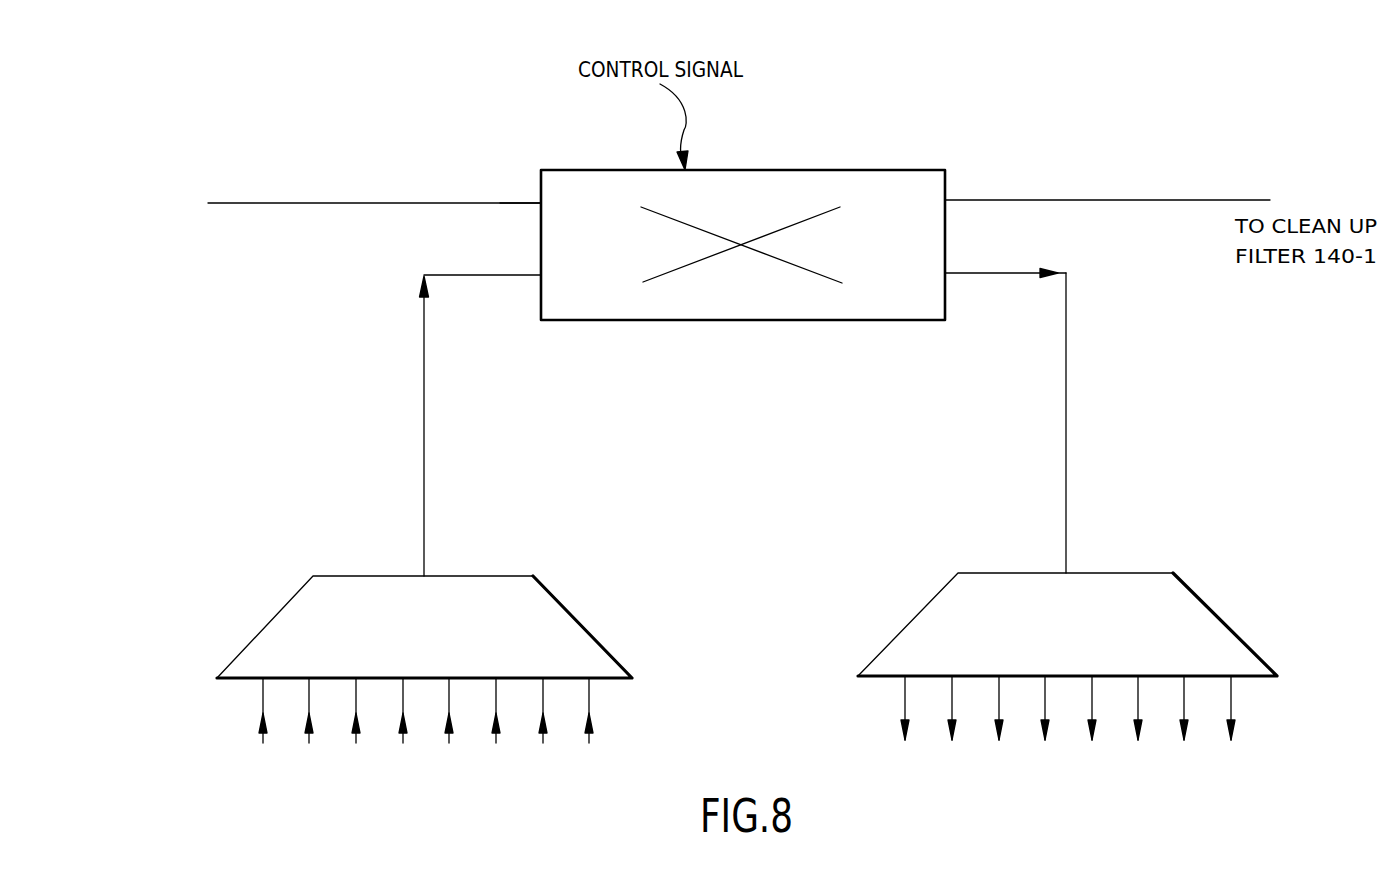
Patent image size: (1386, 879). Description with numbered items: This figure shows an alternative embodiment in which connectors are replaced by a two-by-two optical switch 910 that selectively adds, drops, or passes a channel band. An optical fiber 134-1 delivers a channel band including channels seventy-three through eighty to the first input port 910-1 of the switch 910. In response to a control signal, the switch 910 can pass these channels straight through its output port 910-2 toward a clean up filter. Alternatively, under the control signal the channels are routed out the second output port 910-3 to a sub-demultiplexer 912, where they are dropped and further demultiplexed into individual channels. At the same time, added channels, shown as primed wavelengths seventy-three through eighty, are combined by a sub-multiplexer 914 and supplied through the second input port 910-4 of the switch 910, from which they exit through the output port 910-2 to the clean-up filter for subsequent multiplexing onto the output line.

The 2×2 optical switch 910 is at (872, 170).
The first input port 910-1 is at (540, 200).
The output port 910-2 is at (946, 199).
The second output port 910-3 is at (946, 272).
The second input port 910-4 is at (540, 280).
The optical fiber 134-1 is at (315, 203).
The sub-multiplexer 914 is at (268, 626).
The sub-demultiplexer 912 is at (1224, 625).